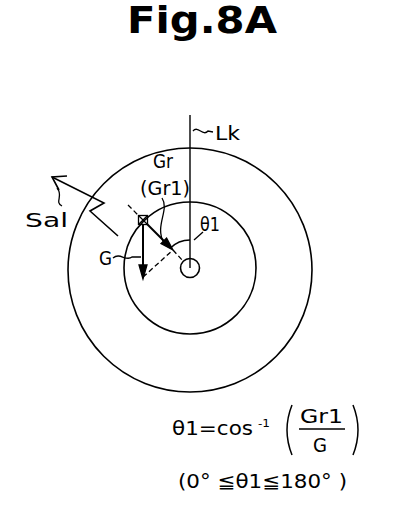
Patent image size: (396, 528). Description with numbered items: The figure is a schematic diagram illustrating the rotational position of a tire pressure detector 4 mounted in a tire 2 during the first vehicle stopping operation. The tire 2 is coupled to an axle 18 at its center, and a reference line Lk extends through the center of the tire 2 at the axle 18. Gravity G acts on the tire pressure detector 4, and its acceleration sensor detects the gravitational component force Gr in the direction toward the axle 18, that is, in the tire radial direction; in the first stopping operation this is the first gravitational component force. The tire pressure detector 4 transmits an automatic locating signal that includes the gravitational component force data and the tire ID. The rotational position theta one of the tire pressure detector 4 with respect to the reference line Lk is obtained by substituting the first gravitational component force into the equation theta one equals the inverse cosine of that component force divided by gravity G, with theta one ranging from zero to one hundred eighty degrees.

The tire 2 is at (272, 166).
The tire pressure detector 4 is at (141, 215).
The axle 18 is at (190, 278).